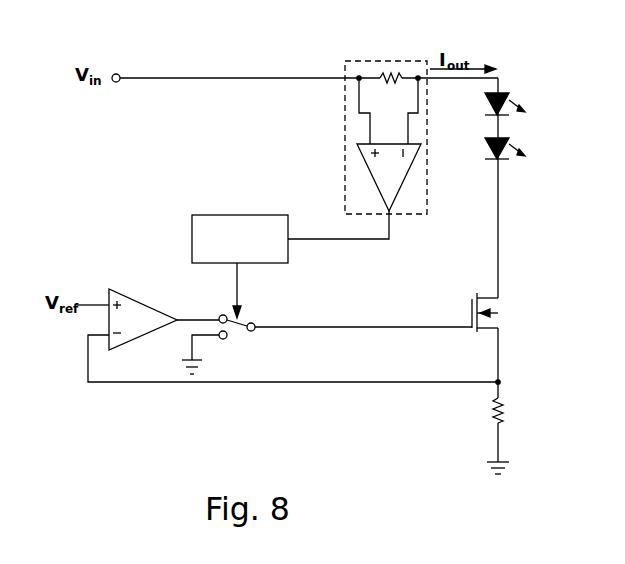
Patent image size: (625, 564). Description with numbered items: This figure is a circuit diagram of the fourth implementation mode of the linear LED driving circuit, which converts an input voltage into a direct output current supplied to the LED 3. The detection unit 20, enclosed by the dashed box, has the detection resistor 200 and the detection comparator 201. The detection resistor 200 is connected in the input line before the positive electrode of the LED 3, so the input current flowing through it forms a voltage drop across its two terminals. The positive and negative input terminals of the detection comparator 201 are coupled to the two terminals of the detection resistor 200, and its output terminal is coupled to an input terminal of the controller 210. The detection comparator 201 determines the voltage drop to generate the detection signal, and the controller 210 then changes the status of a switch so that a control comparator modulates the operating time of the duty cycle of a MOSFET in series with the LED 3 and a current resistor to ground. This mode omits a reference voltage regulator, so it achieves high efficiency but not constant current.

The detection resistor 200 is at (389, 63).
The detection unit 20 is at (345, 113).
The detection comparator 201 is at (405, 178).
The controller 210 is at (210, 215).
The LED 3 is at (506, 95).